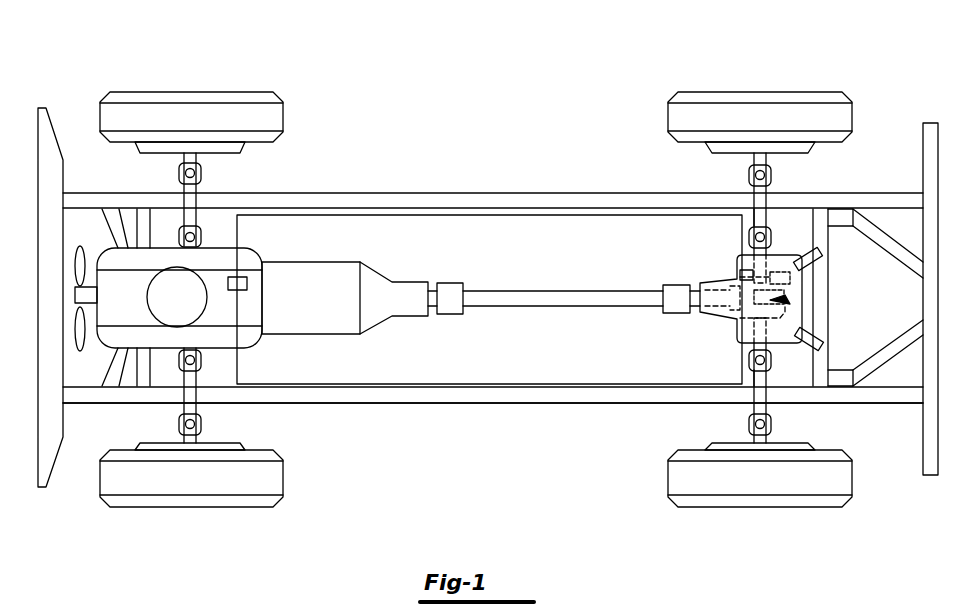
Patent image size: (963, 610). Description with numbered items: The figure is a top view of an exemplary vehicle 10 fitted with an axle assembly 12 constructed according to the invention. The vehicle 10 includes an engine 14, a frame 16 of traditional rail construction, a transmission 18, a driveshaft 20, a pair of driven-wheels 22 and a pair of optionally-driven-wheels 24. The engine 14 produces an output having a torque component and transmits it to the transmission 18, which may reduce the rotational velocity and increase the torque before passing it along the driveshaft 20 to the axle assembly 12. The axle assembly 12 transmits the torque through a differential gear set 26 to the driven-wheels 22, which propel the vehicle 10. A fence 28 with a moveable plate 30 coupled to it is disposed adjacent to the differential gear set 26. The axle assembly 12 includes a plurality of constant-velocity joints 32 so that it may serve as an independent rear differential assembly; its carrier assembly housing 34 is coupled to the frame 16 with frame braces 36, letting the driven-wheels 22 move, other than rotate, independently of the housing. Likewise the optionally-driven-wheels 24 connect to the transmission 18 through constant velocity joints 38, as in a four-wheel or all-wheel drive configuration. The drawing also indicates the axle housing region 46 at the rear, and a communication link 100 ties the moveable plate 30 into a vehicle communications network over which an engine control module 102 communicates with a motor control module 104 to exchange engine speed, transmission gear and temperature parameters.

The vehicle 10 is at (450, 78).
The axle assembly 12 is at (682, 278).
The engine 14 is at (253, 265).
The frame 16 is at (496, 404).
The transmission 18 is at (352, 328).
The driveshaft 20 is at (512, 292).
The driven-wheels 22 is at (780, 91).
The optionally-driven-wheels 24 is at (191, 91).
The differential gear set 26 is at (741, 322).
The fence 28 is at (804, 312).
The moveable plate 30 is at (804, 277).
The constant-velocity joints 32 is at (772, 237).
The carrier assembly housing 34 is at (703, 314).
The frame braces 36 is at (824, 257).
The constant velocity joints 38 is at (201, 236).
The axle housing 46 is at (749, 211).
The communication link 100 is at (497, 215).
The engine control module 102 is at (247, 290).
The motor control module 104 is at (740, 276).